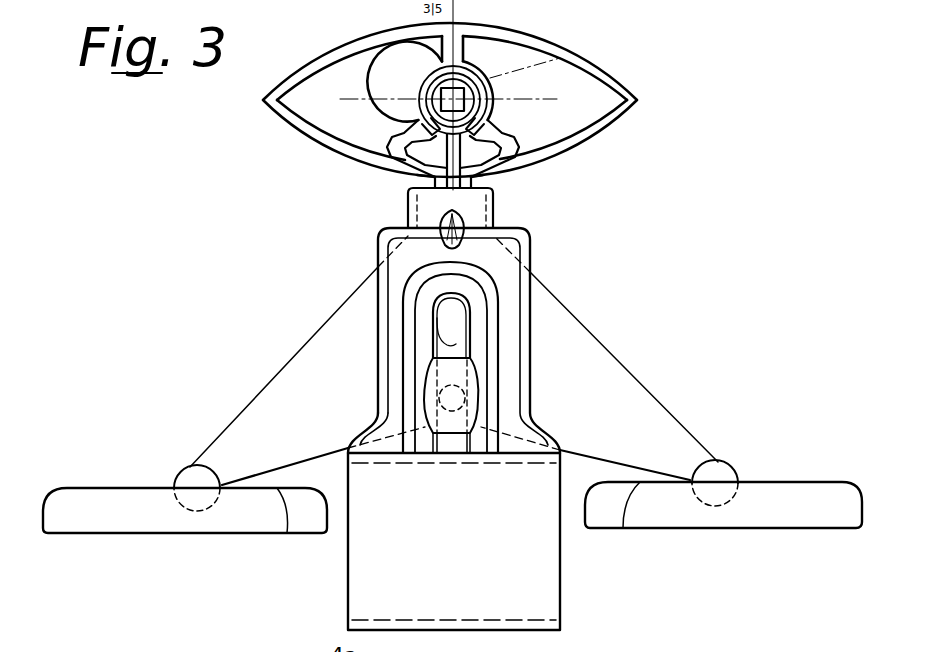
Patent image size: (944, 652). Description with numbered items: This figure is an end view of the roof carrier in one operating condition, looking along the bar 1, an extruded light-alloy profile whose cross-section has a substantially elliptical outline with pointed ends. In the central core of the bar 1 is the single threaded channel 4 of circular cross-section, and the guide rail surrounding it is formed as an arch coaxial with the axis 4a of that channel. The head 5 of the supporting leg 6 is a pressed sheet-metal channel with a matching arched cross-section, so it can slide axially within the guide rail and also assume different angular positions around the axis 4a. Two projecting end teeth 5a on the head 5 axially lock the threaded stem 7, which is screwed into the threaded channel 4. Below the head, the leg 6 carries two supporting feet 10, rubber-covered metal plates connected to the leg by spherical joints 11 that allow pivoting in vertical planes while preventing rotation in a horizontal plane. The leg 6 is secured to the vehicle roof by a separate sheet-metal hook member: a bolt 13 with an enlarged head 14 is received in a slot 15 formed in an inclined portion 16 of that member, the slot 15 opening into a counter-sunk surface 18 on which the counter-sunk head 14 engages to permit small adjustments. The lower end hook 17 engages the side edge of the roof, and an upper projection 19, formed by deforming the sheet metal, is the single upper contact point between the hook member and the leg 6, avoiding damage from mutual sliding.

The bar 1 is at (642, 88).
The threaded channel 4 is at (432, 82).
The axis of threaded channel 4a is at (467, 90).
The head 5 is at (490, 160).
The projecting end teeth 5a is at (483, 137).
The leg 6 is at (660, 397).
The threaded stem 7 is at (432, 90).
The supporting feet 10 is at (104, 488).
The spherical joint 11 is at (192, 480).
The bolt 13 is at (452, 397).
The enlarged head 14 is at (455, 372).
The slot 15 is at (450, 318).
The portion of hook member 16 is at (483, 253).
The end hook 17 is at (543, 572).
The counter-sunk surface 18 is at (420, 345).
The upper projection 19 is at (440, 227).